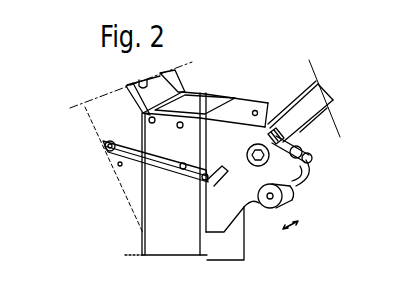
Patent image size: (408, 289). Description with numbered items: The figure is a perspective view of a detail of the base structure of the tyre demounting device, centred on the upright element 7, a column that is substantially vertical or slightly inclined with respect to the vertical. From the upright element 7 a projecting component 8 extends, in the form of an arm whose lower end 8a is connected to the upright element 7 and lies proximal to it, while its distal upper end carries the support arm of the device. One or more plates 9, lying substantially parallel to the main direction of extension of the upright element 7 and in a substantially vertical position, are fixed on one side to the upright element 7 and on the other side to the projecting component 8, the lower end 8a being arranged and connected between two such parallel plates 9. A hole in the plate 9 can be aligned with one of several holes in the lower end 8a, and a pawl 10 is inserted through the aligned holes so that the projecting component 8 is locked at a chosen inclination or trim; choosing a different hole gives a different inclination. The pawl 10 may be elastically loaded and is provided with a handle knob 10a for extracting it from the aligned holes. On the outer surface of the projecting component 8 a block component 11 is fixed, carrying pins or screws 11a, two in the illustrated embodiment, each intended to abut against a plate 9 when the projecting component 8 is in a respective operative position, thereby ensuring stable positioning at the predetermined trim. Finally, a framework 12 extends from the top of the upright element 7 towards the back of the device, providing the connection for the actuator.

The upright element 7 is at (167, 218).
The projecting component 8 is at (312, 82).
The lower end 8a is at (284, 128).
The plate 9 is at (230, 112).
The pawl 10 is at (300, 202).
The handle knob 10a is at (269, 209).
The block component 11 is at (322, 136).
The pins or screws 11a is at (268, 124).
The framework 12 is at (107, 117).